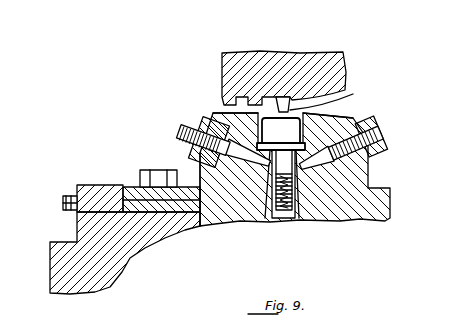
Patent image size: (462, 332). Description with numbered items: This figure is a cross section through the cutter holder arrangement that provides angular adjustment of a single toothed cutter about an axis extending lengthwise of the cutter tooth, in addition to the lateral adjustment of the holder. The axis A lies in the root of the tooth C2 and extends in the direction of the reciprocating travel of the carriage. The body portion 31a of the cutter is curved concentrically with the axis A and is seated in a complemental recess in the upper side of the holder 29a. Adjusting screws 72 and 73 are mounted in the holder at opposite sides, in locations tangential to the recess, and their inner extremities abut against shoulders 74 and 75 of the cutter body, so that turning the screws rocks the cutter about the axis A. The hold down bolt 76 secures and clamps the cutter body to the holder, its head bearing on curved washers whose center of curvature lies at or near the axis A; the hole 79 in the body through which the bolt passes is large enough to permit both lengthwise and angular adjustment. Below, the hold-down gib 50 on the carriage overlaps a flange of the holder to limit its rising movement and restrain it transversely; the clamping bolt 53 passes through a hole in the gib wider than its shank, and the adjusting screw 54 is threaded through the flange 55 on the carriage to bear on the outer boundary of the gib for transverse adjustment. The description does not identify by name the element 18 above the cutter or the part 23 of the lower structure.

The toothed ring segment 18 is at (243, 60).
The tooth C2 is at (284, 100).
The hold down bolt 76 is at (258, 118).
The axis A is at (327, 95).
The body portion 31a is at (340, 115).
The adjusting screw 73 is at (373, 125).
The holder 29a is at (350, 183).
The adjusting screw 72 is at (195, 128).
The adjusting screw 54 is at (72, 196).
The flange 55 is at (105, 192).
The clamping bolt 53 is at (153, 177).
The hold-down gib 50 is at (197, 202).
The shoulder 74 is at (265, 197).
The hole 79 is at (283, 198).
The shoulder 75 is at (302, 190).
The base 23 is at (120, 237).